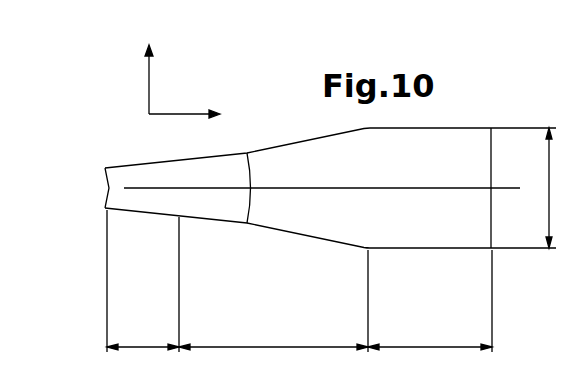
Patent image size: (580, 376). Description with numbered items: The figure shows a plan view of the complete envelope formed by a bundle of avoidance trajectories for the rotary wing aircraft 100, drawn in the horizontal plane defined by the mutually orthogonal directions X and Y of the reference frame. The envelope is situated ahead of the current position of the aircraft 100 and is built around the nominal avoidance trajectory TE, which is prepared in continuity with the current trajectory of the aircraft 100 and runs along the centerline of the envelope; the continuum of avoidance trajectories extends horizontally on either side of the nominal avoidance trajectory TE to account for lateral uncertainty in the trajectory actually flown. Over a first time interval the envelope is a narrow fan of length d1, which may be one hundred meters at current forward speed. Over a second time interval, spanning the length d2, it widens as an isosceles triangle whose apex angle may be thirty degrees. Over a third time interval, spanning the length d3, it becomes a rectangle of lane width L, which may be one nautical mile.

The aircraft 100 is at (97, 186).
The nominal avoidance trajectory TE is at (460, 188).
The lane width L is at (533, 188).
The length of the fan d1 is at (143, 336).
The second section length d2 is at (273, 336).
The third section length d3 is at (430, 336).
The direction X is at (195, 118).
The direction Y is at (148, 64).